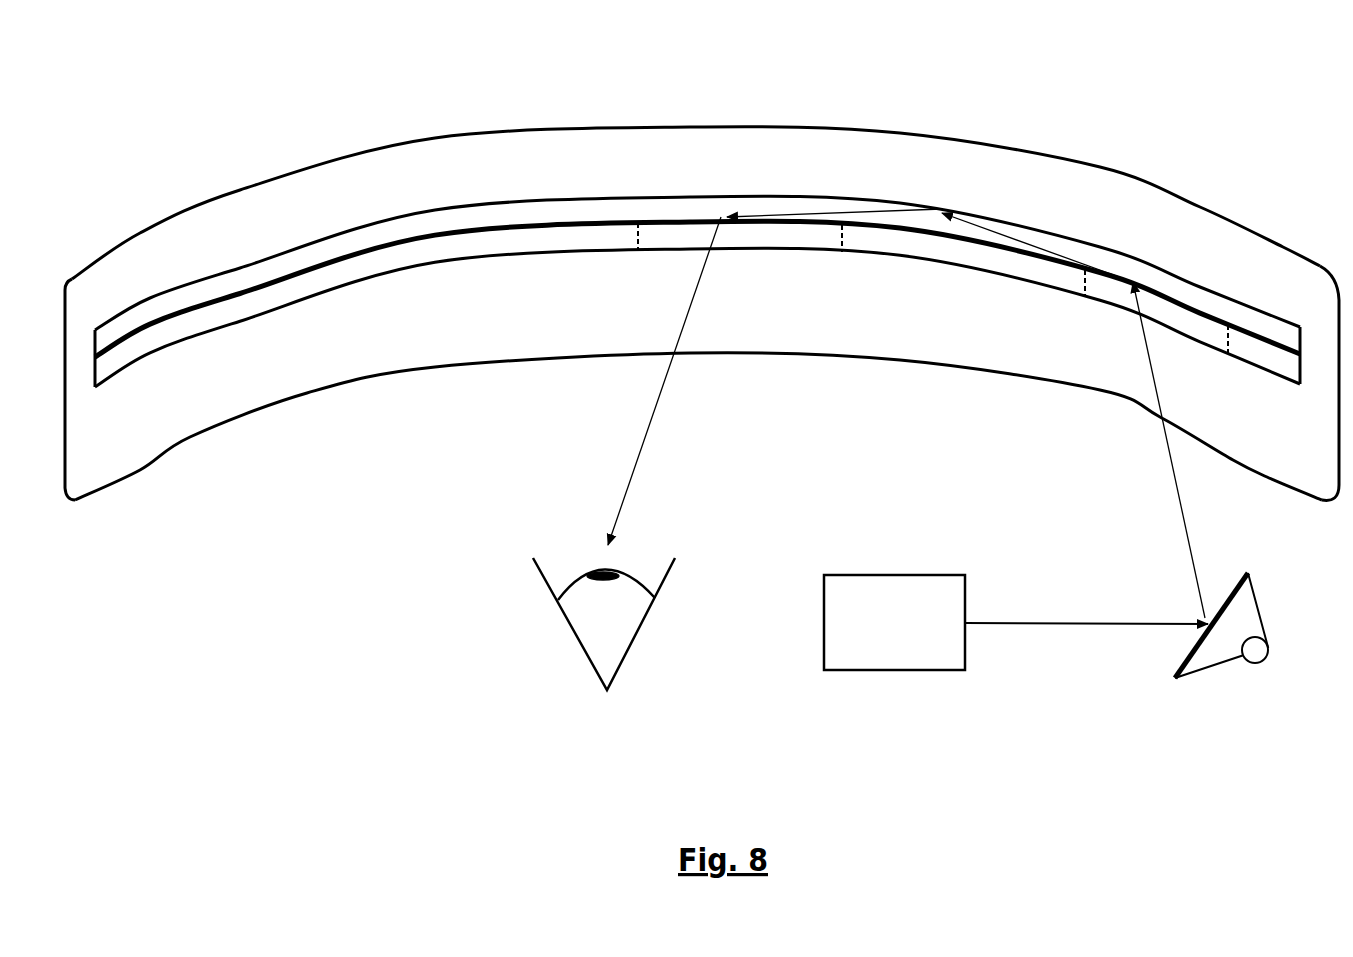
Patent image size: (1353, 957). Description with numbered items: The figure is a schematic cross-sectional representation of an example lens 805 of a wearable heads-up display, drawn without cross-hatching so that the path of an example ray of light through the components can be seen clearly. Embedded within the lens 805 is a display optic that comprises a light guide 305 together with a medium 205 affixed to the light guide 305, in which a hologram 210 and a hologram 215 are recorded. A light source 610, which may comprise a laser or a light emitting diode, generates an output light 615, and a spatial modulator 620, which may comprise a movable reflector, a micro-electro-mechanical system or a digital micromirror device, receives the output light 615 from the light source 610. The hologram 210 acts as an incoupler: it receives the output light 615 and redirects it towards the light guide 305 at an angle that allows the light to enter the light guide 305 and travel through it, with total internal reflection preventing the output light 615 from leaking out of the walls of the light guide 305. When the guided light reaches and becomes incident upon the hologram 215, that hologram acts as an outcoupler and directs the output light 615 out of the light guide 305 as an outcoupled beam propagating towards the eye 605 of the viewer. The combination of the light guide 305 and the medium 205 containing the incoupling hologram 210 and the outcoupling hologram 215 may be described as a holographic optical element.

The medium 205 is at (192, 327).
The hologram 210 is at (1207, 320).
The hologram 215 is at (690, 243).
The light guide 305 is at (246, 273).
The lens 805 is at (380, 168).
The eye 605 is at (575, 633).
The light source 610 is at (894, 622).
The output light 615 is at (1067, 623).
The spatial modulator 620 is at (1227, 667).